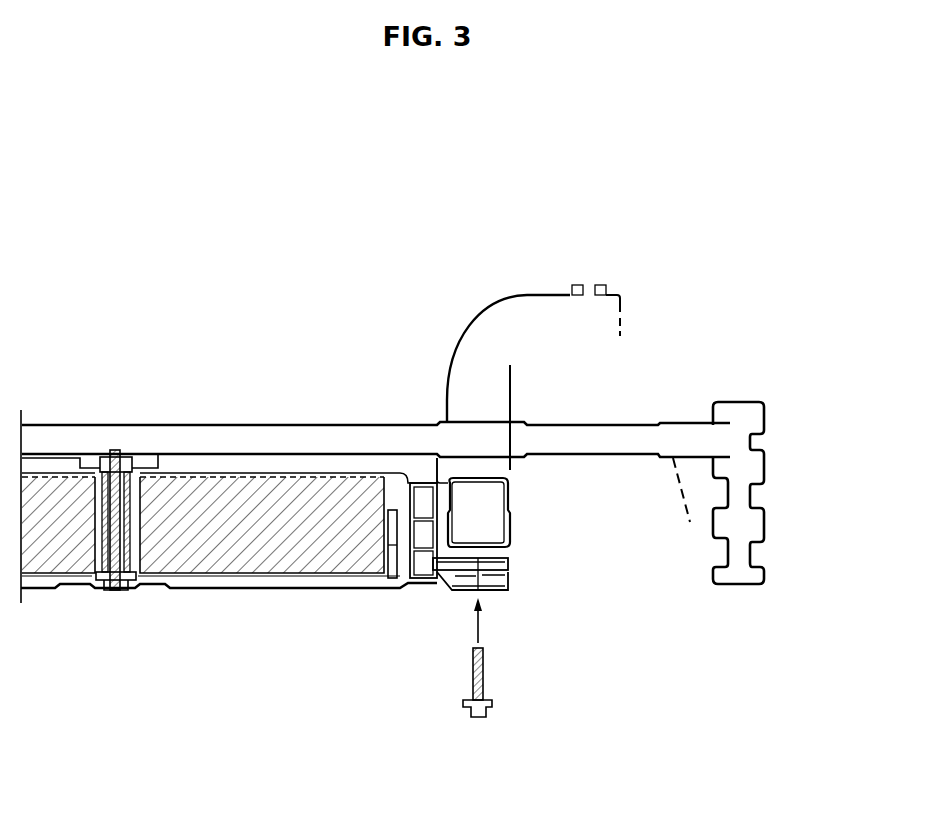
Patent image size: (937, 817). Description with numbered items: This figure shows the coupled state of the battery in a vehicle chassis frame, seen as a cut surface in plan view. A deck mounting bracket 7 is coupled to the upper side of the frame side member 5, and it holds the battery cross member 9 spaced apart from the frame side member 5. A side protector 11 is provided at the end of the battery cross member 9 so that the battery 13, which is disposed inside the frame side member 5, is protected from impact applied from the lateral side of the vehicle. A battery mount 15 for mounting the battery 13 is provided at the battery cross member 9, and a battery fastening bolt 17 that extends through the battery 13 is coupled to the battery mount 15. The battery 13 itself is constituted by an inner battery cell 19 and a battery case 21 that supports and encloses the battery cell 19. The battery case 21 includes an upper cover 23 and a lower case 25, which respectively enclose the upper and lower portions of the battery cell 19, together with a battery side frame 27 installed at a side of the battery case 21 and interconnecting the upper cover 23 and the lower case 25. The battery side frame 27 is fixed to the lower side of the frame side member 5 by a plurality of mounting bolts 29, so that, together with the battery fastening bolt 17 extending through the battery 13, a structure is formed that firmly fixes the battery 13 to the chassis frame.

The frame side member 5 is at (509, 532).
The deck mounting bracket 7 is at (541, 293).
The battery cross member 9 is at (300, 424).
The side protector 11 is at (764, 520).
The battery 13 is at (378, 708).
The battery mount 15 is at (127, 452).
The battery fastening bolt 17 is at (114, 591).
The battery cell 19 is at (262, 548).
The battery case 21 is at (449, 664).
The upper cover 23 is at (382, 571).
The lower case 25 is at (410, 580).
The battery side frame 27 is at (446, 592).
The mounting bolt 29 is at (485, 676).